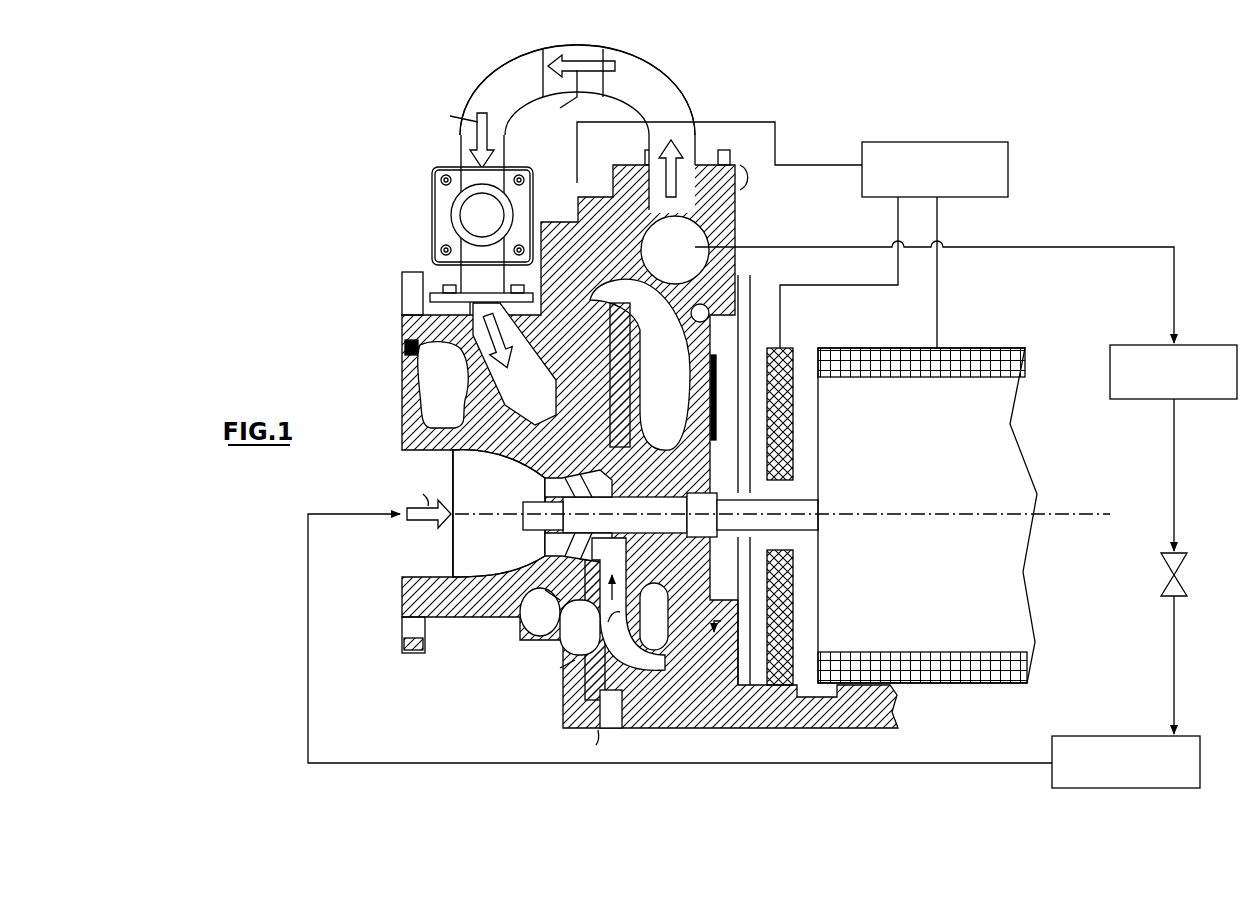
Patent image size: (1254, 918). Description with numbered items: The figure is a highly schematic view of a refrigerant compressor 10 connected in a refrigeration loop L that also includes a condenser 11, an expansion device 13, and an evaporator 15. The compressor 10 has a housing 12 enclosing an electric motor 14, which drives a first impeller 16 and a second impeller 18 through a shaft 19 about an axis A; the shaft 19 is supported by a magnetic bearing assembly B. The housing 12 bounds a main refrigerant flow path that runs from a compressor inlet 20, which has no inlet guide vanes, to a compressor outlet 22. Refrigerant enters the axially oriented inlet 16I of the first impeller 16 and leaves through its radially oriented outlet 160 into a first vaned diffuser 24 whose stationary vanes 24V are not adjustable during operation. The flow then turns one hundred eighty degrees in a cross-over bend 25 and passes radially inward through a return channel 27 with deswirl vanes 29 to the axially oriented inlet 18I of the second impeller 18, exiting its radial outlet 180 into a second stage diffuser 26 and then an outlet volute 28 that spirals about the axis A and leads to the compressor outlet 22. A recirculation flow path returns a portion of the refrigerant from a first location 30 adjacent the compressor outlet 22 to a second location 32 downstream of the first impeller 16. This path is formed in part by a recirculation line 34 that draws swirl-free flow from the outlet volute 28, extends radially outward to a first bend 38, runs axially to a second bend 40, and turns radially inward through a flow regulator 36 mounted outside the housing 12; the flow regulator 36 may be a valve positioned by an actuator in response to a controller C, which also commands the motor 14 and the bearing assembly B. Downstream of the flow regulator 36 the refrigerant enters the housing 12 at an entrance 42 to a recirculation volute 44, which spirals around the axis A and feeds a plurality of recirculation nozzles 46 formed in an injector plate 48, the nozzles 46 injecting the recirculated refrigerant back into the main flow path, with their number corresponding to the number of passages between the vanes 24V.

The refrigerant compressor 10 is at (338, 178).
The condenser 11 is at (1138, 345).
The housing 12 is at (735, 738).
The expansion device 13 is at (1178, 550).
The electric motor 14 is at (1035, 415).
The evaporator 15 is at (1108, 736).
The first impeller 16 is at (500, 548).
The inlet of first impeller 16I is at (500, 565).
The second impeller 18 is at (668, 532).
The inlet of second impeller 18I is at (662, 534).
The shaft 19 is at (805, 540).
The compressor inlet 20 is at (420, 544).
The compressor outlet 22 is at (690, 243).
The first vaned diffuser 24 is at (560, 692).
The vanes 24V is at (632, 421).
The cross-over bend 25 is at (612, 705).
The second stage diffuser 26 is at (716, 372).
The return channel 27 is at (675, 649).
The outlet volute 28 is at (748, 315).
The deswirl vanes 29 is at (560, 670).
The first location 30 is at (700, 215).
The second location 32 is at (560, 414).
The recirculation line 34 is at (680, 92).
The flow regulator 36 is at (425, 194).
The first bend 38 is at (640, 62).
The second bend 40 is at (505, 76).
The entrance 42 is at (468, 300).
The recirculation volute 44 is at (460, 453).
The recirculation nozzles 46 is at (518, 492).
The injector plate 48 is at (560, 602).
The outlet of first impeller 160 is at (556, 650).
The outlet of second impeller 180 is at (720, 606).
The axis A is at (1060, 514).
The bearing assembly B is at (798, 348).
The controller C is at (948, 142).
The refrigeration loop L is at (305, 612).